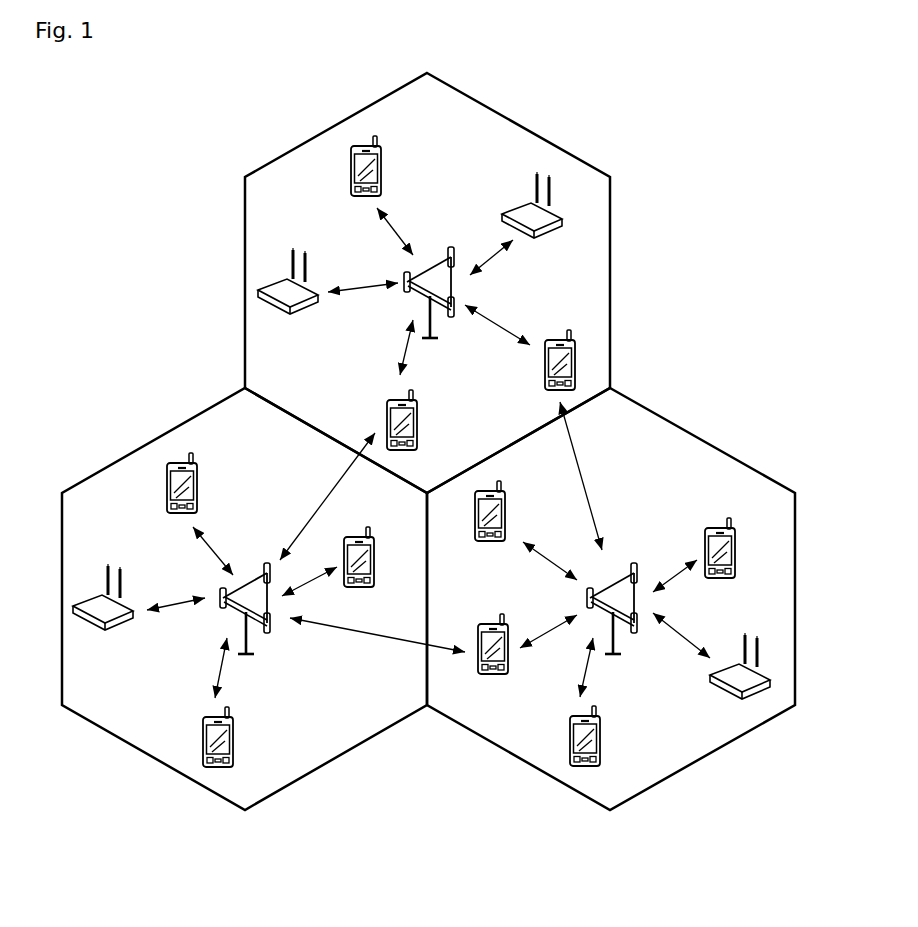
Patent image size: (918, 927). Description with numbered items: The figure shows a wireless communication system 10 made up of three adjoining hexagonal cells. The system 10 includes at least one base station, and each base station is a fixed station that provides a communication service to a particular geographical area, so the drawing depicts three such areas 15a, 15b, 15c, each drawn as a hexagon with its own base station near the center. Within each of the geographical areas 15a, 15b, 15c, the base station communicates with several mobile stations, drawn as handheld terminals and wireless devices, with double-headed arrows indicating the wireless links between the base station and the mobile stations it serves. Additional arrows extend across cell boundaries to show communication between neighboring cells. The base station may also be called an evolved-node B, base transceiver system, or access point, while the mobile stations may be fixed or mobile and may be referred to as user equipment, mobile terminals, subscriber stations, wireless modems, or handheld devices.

The wireless communication system 10 is at (428, 441).
The geographical area 15a is at (610, 270).
The geographical area 15b is at (725, 454).
The geographical area 15c is at (125, 453).